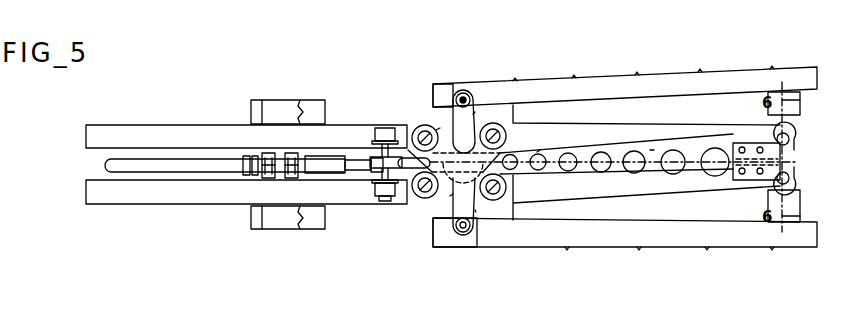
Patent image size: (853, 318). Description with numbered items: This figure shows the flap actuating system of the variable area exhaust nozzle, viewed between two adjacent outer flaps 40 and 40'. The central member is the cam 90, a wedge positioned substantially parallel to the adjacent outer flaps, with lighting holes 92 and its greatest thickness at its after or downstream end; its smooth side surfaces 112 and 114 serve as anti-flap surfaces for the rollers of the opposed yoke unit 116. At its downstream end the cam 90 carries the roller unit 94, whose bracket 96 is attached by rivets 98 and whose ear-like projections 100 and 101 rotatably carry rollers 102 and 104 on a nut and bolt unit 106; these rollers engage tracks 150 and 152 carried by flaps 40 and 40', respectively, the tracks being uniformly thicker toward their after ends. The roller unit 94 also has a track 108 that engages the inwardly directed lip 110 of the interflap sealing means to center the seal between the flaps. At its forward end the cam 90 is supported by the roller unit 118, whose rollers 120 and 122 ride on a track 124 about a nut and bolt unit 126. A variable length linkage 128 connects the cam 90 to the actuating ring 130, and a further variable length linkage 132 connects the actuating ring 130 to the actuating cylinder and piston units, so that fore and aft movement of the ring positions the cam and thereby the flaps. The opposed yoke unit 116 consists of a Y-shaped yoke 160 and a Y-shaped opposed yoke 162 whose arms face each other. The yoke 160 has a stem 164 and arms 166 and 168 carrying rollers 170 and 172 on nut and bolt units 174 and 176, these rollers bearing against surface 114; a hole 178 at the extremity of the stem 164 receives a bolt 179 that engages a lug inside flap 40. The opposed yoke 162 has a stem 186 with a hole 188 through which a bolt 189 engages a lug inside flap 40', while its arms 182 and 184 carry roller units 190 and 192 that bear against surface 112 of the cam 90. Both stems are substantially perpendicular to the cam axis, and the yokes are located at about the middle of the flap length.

The outer flap 40 is at (619, 64).
The adjacent outer flap 40' is at (627, 269).
The cam 90 is at (652, 150).
The lighting holes 92 is at (608, 152).
The roller unit 94 is at (789, 162).
The bracket 96 is at (750, 180).
The rivets 98 is at (745, 147).
The ear-like projection 100 is at (790, 181).
The ear-like projection 101 is at (780, 147).
The roller 102 is at (790, 139).
The roller 104 is at (790, 176).
The nut and bolt unit 106 is at (790, 130).
The track 108 is at (732, 132).
The inwardly directed lip 110 is at (628, 172).
The smooth side surface 112 is at (695, 131).
The smooth side surface 114 is at (643, 185).
The opposed yoke unit 116 is at (487, 118).
The roller unit 118 is at (404, 124).
The roller 120 is at (387, 133).
The roller 122 is at (387, 199).
The track 124 is at (197, 136).
The nut and bolt unit 126 is at (378, 190).
The variable length linkage 128 is at (352, 158).
The actuating ring 130 is at (295, 105).
The variable length linkage 132 is at (132, 160).
The track 150 is at (692, 78).
The track 152 is at (703, 222).
The yoke 160 is at (466, 121).
The opposed yoke 162 is at (455, 218).
The stem 164 is at (475, 112).
The arm 166 is at (446, 186).
The arm 168 is at (508, 197).
The roller 170 is at (418, 210).
The roller 172 is at (506, 188).
The nut and bolt unit 174 is at (450, 196).
The nut and bolt unit 176 is at (476, 212).
The hole 178 is at (463, 92).
The bolt 179 is at (440, 128).
The arm 182 is at (452, 132).
The arm 184 is at (540, 150).
The stem 186 is at (458, 228).
The hole 188 is at (463, 233).
The bolt 189 is at (470, 226).
The roller unit 190 is at (440, 126).
The roller unit 192 is at (502, 143).